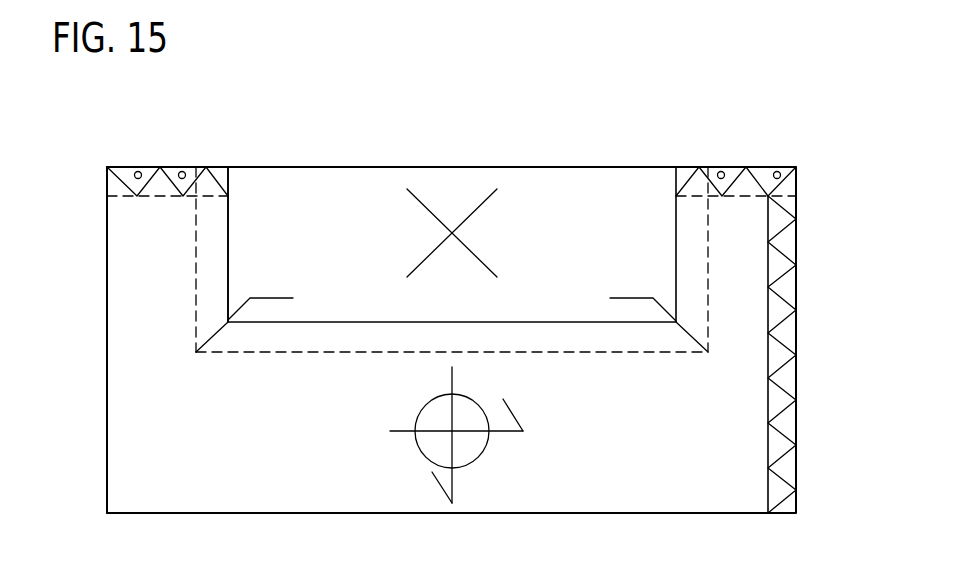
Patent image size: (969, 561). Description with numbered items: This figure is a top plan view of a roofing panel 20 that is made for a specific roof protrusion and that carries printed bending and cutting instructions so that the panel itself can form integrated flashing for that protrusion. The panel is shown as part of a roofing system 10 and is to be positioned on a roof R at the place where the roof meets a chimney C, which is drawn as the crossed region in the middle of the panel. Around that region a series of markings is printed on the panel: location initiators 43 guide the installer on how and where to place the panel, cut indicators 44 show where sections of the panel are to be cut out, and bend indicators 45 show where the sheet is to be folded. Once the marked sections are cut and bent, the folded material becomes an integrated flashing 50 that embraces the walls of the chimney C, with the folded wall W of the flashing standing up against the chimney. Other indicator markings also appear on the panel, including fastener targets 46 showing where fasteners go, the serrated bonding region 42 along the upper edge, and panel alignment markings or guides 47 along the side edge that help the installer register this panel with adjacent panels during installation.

The container / package 10 is at (687, 90).
The roofing panel 20 is at (573, 157).
The top zigzag bonding region 42 is at (173, 167).
The location initiators 43 is at (420, 450).
The cut indicators 44 is at (273, 298).
The bend indicators 45 is at (330, 352).
The fastener targets 46 is at (137, 170).
The panel alignment markings 47 is at (785, 290).
The integrated flashing 50 is at (216, 260).
The roof R is at (103, 327).
The wall W is at (229, 232).
The chimney C is at (450, 208).